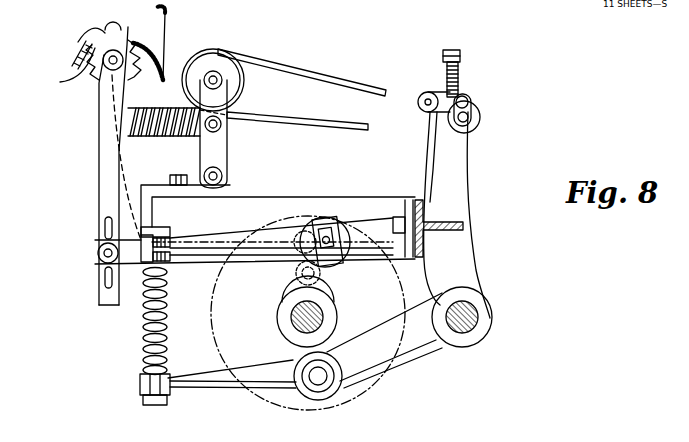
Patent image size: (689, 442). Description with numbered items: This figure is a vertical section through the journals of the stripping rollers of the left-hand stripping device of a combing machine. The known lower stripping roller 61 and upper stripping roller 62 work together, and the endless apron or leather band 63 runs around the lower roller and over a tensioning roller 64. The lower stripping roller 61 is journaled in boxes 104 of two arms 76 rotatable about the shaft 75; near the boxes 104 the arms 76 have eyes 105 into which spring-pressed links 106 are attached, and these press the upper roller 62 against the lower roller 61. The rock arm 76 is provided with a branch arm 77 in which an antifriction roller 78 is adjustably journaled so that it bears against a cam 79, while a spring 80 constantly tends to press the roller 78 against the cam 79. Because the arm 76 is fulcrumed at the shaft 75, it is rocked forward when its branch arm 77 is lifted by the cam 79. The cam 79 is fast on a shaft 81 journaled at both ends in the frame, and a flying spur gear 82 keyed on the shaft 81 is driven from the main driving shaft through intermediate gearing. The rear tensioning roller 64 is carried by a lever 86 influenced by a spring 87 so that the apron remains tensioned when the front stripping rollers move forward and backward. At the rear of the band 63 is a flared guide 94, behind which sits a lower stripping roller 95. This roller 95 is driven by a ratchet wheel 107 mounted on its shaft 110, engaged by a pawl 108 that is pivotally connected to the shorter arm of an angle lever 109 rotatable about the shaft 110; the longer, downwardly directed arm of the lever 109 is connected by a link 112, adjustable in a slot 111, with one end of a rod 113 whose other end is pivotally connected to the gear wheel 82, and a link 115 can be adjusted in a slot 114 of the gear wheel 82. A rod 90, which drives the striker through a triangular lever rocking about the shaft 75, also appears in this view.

The lower stripping roller 61 is at (476, 123).
The upper stripping roller 62 is at (470, 103).
The endless apron or leather band 63 is at (324, 80).
The tensioning roller 64 is at (222, 63).
The shaft 75 is at (460, 334).
The rock arm 76 is at (464, 243).
The branch arm 77 is at (263, 240).
The antifriction roller 78 is at (344, 236).
The cam 79 is at (336, 284).
The spring 80 is at (142, 333).
The shaft 81 is at (322, 314).
The flying spur gear 82 is at (364, 384).
The lever 86 is at (223, 162).
The spring 87 is at (168, 134).
The rod 90 is at (115, 21).
The flared guide 94 is at (158, 61).
The lower stripping roller 95 is at (61, 82).
The box 104 is at (474, 116).
The eye 105 is at (426, 110).
The spring-pressed link 106 is at (453, 98).
The ratchet wheel 107 is at (140, 52).
The pawl 108 is at (103, 35).
The angle lever 109 is at (100, 34).
The shaft 110 is at (100, 72).
The slot 111 is at (104, 283).
The link 112 is at (98, 254).
The rod 113 is at (194, 258).
The slot 114 is at (262, 268).
The link 115 is at (272, 233).